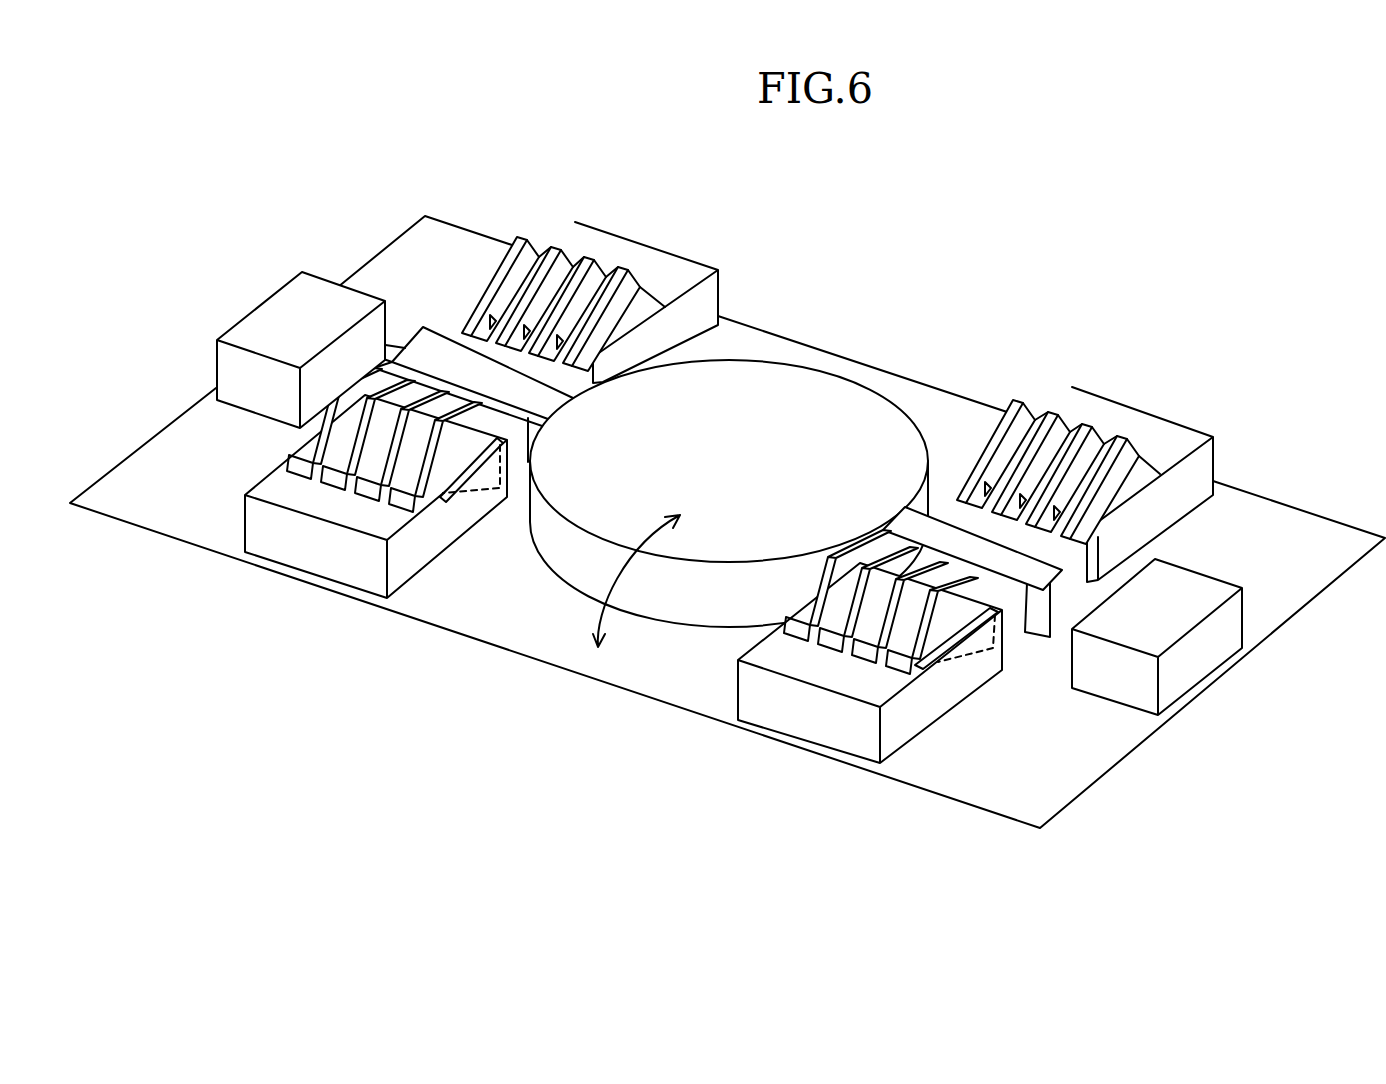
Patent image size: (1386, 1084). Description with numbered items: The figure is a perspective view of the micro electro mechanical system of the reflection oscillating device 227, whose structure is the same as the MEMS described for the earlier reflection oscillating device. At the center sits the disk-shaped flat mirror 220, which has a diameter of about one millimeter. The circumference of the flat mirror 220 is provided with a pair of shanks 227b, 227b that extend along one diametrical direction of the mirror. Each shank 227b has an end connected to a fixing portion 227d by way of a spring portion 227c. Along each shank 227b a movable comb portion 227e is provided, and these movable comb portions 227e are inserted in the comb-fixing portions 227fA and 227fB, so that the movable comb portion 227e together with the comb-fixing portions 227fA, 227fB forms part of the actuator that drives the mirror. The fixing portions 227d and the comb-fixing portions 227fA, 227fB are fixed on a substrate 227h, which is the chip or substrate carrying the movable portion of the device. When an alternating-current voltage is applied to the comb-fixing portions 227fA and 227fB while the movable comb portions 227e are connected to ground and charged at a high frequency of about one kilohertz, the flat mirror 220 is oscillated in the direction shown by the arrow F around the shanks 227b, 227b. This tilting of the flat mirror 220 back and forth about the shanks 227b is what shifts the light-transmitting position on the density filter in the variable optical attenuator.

The flat mirror 220 is at (790, 412).
The reflection oscillating device 227 is at (800, 252).
The shanks 227b is at (447, 368).
The spring portion 227c is at (397, 340).
The fixing portion 227d is at (313, 285).
The movable comb portions 227e is at (622, 307).
The comb-fixing portion 227fA is at (337, 575).
The comb-fixing portion 227fB is at (608, 242).
The substrate 227h is at (162, 512).
The arrow F is at (600, 630).